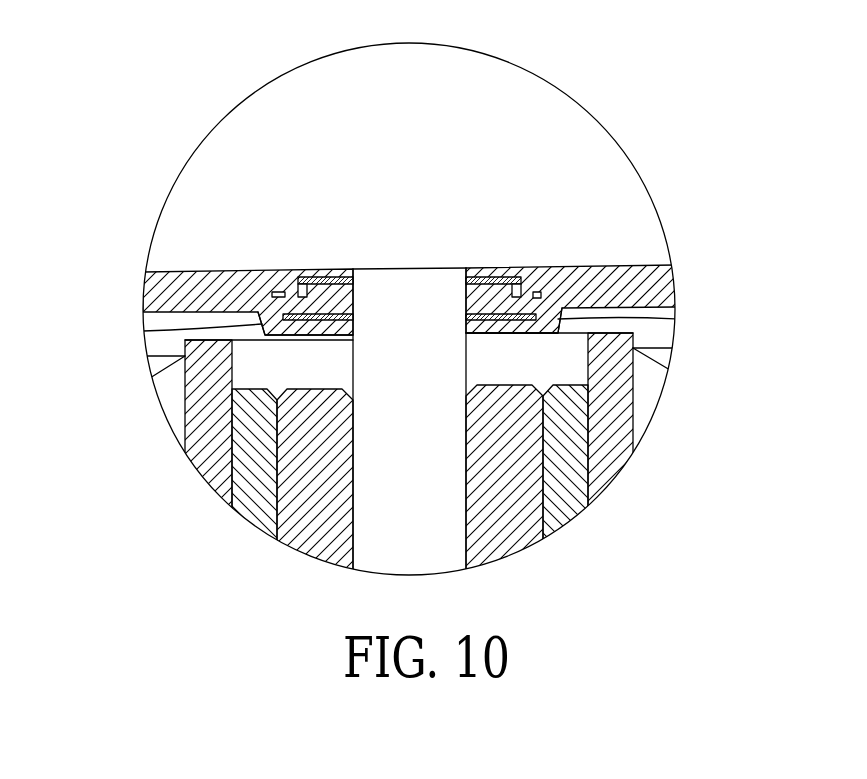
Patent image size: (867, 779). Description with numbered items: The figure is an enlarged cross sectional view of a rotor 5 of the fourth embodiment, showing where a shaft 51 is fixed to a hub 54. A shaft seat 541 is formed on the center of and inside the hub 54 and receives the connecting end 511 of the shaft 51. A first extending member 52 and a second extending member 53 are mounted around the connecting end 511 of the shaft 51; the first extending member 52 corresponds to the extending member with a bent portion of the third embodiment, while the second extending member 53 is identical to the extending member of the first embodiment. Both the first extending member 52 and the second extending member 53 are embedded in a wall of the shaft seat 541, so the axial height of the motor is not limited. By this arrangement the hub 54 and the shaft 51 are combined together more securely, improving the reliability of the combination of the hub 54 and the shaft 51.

The rotor 5 is at (178, 258).
The shaft 51 is at (442, 508).
The connecting end 511 is at (390, 270).
The first extending member 52 is at (493, 270).
The second extending member 53 is at (625, 316).
The hub 54 is at (150, 293).
The shaft seat 541 is at (267, 321).